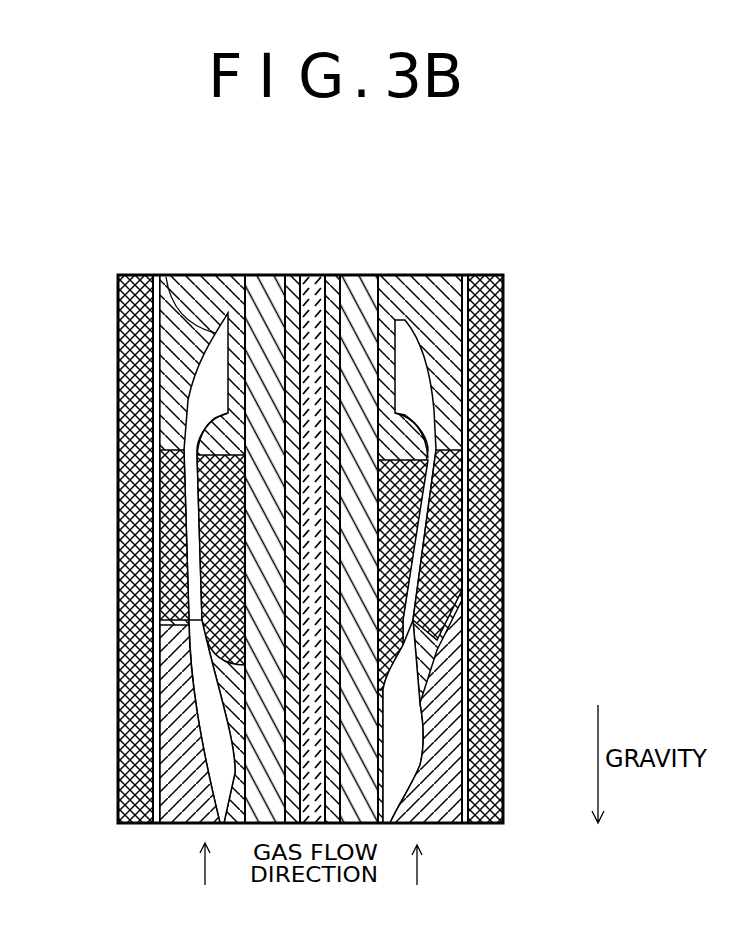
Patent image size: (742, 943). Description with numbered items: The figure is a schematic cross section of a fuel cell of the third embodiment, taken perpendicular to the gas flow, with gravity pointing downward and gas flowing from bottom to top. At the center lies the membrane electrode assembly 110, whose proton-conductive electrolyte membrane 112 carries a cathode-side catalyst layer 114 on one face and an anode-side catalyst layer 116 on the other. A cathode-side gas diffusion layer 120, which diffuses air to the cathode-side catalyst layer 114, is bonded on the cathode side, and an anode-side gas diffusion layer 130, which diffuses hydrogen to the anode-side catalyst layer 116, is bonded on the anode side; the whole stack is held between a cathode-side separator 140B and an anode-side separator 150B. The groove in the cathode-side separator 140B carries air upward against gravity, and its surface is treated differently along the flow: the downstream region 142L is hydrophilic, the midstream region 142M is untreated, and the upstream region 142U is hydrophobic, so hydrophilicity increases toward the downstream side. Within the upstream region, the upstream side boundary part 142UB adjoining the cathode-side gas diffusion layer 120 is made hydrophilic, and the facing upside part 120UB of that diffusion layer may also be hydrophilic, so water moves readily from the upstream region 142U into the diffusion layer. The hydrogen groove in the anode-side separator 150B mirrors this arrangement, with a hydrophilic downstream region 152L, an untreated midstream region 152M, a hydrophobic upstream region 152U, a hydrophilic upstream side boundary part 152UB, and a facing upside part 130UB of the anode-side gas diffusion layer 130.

The membrane electrode assembly 110 is at (313, 492).
The electrolyte membrane 112 is at (312, 275).
The cathode-side catalyst layer 114 is at (290, 275).
The anode-side catalyst layer 116 is at (357, 514).
The cathode-side gas diffusion layer 120 is at (147, 565).
The anode-side gas diffusion layer 130 is at (480, 568).
The cathode-side separator 140B is at (148, 275).
The anode-side separator 150B is at (483, 275).
The downstream region 142L is at (118, 377).
The midstream region 142M is at (118, 549).
The upstream region 142U is at (118, 729).
The upstream side boundary part 142UB is at (232, 823).
The upside part 120UB is at (252, 823).
The downstream region 152L is at (503, 383).
The midstream region 152M is at (503, 555).
The upstream region 152U is at (503, 729).
The upstream side boundary part 152UB is at (396, 823).
The upside part 130UB is at (376, 823).